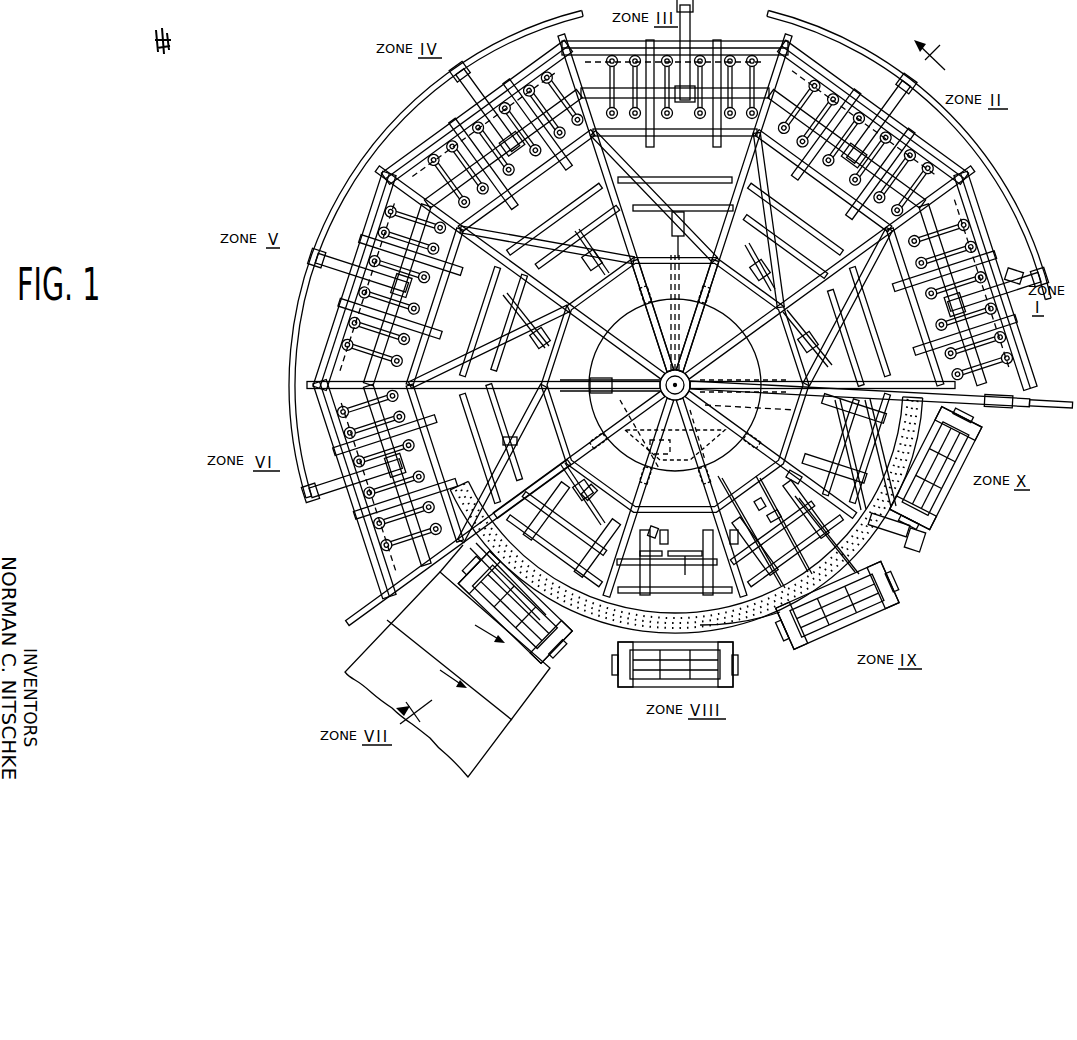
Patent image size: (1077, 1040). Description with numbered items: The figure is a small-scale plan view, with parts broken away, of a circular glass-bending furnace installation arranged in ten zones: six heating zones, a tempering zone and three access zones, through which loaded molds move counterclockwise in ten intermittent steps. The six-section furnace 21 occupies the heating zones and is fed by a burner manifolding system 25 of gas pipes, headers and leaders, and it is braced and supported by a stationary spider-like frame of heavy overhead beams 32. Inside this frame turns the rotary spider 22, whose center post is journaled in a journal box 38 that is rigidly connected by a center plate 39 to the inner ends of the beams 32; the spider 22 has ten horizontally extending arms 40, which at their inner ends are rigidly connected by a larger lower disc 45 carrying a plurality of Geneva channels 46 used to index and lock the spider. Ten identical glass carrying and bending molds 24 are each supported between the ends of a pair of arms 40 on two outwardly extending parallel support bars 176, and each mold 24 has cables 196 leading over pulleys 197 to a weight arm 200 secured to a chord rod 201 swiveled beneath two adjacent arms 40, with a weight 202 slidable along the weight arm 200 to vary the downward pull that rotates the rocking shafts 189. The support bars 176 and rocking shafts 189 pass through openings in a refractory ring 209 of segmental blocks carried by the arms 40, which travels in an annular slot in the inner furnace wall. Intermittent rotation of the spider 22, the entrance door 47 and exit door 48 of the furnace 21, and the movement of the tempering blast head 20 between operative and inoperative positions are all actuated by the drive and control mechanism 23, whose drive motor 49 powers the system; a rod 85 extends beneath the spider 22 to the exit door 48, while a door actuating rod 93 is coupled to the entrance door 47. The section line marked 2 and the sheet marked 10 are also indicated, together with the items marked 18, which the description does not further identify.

The section line 2 is at (675, 382).
The sheet strip 10 is at (485, 615).
The indicated element 18 is at (803, 448).
The tempering blast head 20 is at (528, 705).
The furnace 21 is at (410, 130).
The rotary spider 22 is at (905, 560).
The drive and control mechanism 23 is at (796, 411).
The glass carrying and bending mold 24 is at (964, 504).
The burner manifolding system 25 is at (1018, 272).
The overhead beam 32 is at (565, 52).
The journal box 38 is at (698, 315).
The center plate 39 is at (690, 345).
The arm 40 is at (662, 530).
The lower disc 45 is at (642, 333).
The Geneva channel 46 is at (630, 300).
The entrance door 47 is at (1048, 409).
The exit door 48 is at (348, 614).
The drive motor 49 is at (598, 492).
The rod 85 is at (518, 441).
The door actuating rod 93 is at (996, 409).
The support bar 176 is at (780, 558).
The rocking shaft 189 is at (880, 485).
The cable 196 is at (649, 546).
The pulley 197 is at (686, 552).
The weight arm 200 is at (567, 497).
The chord rod 201 is at (686, 250).
The weight 202 is at (779, 506).
The refractory ring 209 is at (754, 630).